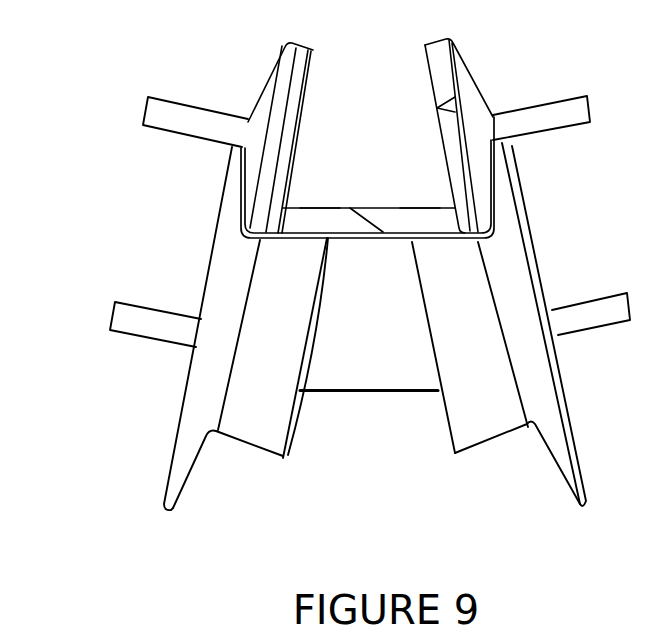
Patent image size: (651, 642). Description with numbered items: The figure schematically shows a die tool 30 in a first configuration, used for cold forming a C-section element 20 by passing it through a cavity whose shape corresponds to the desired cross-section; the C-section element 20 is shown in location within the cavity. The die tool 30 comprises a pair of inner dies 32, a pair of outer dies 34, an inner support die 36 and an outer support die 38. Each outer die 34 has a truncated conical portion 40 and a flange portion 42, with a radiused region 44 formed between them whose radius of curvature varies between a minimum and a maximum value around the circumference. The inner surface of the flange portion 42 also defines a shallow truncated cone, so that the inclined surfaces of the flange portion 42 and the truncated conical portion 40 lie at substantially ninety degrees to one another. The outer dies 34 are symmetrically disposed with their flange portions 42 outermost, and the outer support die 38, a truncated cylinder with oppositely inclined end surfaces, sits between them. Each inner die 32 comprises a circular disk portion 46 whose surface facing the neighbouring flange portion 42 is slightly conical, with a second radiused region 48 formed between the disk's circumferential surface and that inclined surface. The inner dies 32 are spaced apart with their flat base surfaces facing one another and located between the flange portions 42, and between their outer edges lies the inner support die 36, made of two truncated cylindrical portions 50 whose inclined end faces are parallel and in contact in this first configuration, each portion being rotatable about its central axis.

The C-section element 20 is at (481, 167).
The die tool 30 is at (122, 197).
The inner dies 32 is at (318, 100).
The outer dies 34 is at (435, 448).
The inner support die 36 is at (364, 186).
The outer support die 38 is at (373, 392).
The truncated conical portion 40 is at (240, 432).
The flange portion 42 is at (174, 507).
The radiused region 44 is at (528, 425).
The circular disk portion 46 is at (313, 50).
The second radiused region 48 is at (287, 43).
The truncated cylindrical portions 50 is at (320, 214).